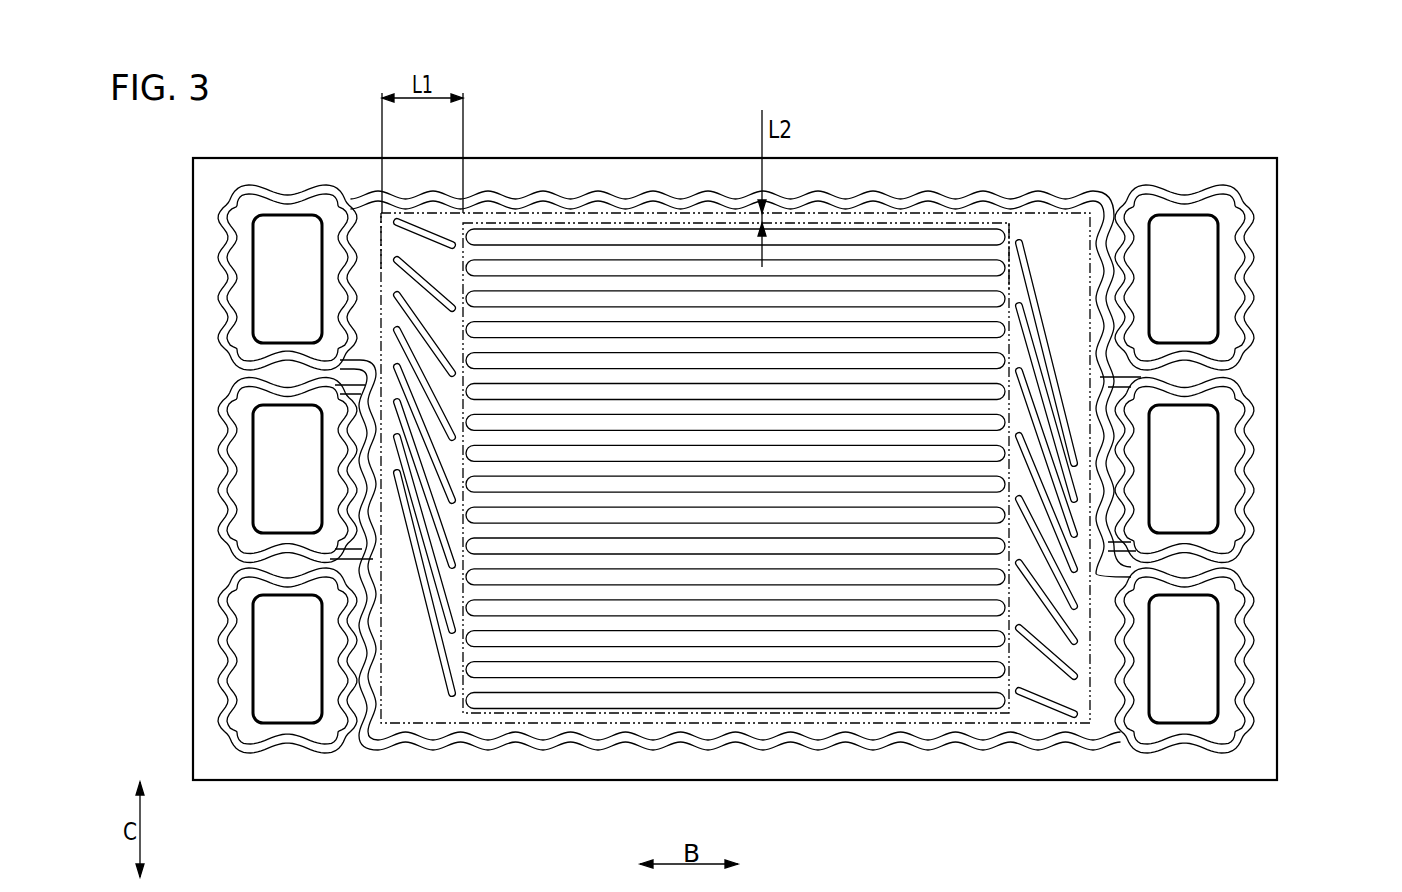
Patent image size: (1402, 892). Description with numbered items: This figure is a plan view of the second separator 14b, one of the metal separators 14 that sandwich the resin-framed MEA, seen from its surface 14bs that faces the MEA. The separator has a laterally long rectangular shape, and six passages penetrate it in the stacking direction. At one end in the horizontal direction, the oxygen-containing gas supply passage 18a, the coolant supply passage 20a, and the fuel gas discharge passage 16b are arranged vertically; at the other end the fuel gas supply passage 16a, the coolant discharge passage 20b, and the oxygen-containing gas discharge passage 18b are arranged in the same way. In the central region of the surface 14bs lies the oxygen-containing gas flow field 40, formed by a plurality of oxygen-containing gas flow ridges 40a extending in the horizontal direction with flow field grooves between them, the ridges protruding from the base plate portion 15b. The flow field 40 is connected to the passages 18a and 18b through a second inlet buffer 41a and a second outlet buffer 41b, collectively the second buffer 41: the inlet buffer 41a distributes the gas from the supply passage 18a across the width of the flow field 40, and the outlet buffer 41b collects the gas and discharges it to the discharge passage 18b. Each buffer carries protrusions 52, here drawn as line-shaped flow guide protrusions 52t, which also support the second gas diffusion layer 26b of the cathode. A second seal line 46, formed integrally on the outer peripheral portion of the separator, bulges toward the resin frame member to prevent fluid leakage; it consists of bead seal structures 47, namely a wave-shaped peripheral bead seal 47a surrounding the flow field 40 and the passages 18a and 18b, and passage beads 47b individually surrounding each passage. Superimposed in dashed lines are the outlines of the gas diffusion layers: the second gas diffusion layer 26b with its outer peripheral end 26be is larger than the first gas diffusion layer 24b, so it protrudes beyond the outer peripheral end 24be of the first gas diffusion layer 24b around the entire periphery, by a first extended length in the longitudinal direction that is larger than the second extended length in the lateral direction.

The metal separator 14 is at (772, 479).
The second separator 14b is at (772, 479).
The surface of the second separator 14bs is at (1105, 707).
The base plate portion 15b is at (1195, 188).
The fuel gas supply passage 16a is at (1202, 285).
The fuel gas discharge passage 16b is at (277, 678).
The oxygen-containing gas supply passage 18a is at (268, 278).
The oxygen-containing gas discharge passage 18b is at (1202, 685).
The coolant supply passage 20a is at (272, 470).
The coolant discharge passage 20b is at (1200, 472).
The first gas diffusion layer 24b is at (764, 396).
The outer peripheral end of the first gas diffusion layer 24be is at (1008, 273).
The second gas diffusion layer 26b is at (705, 405).
The outer peripheral end of the second gas diffusion layer 26be is at (382, 236).
The oxygen-containing gas flow field 40 is at (735, 409).
The oxygen-containing gas flow ridges 40a is at (953, 265).
The second buffer 41 is at (727, 488).
The second inlet buffer 41a is at (436, 711).
The second outlet buffer 41b is at (1030, 721).
The second seal line 46 is at (743, 485).
The bead seal structures 47 is at (766, 511).
The peripheral bead seal 47a is at (1113, 737).
The passage beads 47b is at (743, 466).
The protrusions 52 is at (727, 488).
The flow guide protrusions 52t is at (441, 662).